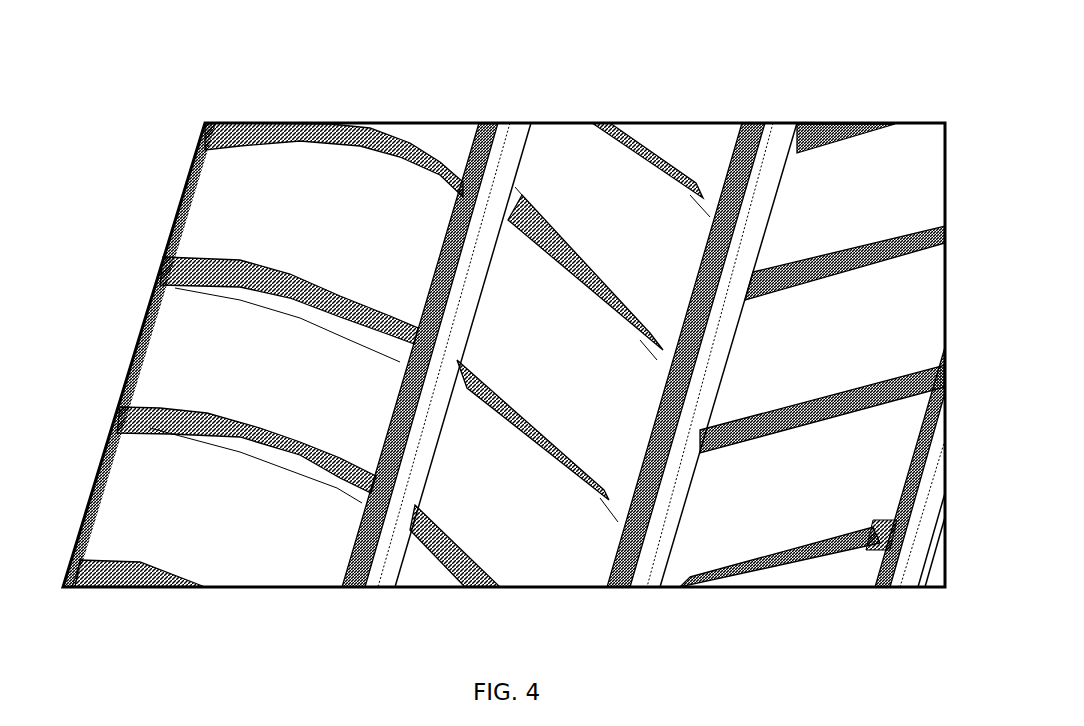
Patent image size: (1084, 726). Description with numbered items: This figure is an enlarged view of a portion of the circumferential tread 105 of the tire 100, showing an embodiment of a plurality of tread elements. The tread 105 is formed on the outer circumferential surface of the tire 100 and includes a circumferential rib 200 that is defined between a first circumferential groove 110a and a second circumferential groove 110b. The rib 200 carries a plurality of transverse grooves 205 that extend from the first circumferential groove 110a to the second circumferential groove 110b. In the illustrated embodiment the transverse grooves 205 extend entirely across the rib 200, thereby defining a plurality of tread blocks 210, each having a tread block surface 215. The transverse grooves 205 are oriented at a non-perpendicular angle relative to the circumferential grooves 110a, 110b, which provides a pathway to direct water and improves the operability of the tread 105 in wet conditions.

The tire 100 is at (205, 355).
The circumferential tread 105 is at (323, 223).
The first circumferential groove 110a is at (462, 273).
The second circumferential groove 110b is at (758, 216).
The circumferential rib 200 is at (538, 108).
The transverse grooves 205 is at (490, 398).
The tread blocks 210 is at (585, 390).
The tread block surface 215 is at (536, 361).